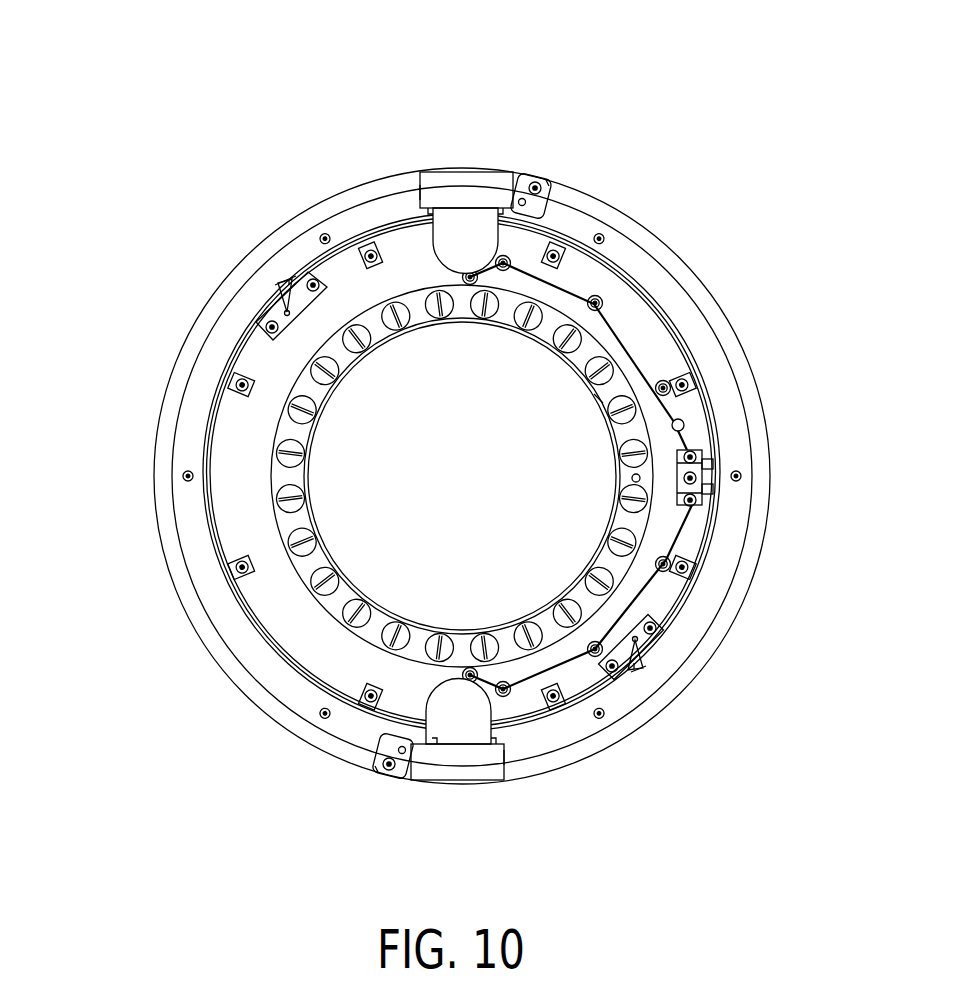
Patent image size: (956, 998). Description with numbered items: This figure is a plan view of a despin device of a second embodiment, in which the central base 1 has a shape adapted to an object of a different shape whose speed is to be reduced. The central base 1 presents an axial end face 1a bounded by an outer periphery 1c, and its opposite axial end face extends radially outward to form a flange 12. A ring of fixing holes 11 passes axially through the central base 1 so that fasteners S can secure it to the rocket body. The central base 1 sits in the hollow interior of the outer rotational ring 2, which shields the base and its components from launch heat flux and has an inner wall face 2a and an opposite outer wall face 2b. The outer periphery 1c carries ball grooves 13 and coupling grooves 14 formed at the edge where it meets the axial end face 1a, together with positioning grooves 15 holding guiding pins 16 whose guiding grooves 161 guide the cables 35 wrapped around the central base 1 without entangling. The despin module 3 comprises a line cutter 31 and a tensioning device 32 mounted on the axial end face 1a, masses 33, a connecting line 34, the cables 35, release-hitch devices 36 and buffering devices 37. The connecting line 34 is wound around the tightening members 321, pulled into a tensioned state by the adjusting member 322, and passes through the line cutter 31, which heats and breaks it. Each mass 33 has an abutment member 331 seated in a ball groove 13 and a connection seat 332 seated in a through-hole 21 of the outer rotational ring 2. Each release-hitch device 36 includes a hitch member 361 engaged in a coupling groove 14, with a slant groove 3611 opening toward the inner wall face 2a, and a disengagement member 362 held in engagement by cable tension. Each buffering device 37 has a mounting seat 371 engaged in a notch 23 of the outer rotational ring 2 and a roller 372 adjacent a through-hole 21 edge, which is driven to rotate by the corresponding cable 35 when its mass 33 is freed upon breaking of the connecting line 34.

The central base 1 is at (212, 410).
The axial end face 1a is at (282, 622).
The outer periphery 1c is at (292, 640).
The outer rotational ring 2 is at (50, 503).
The inner wall face 2a is at (200, 550).
The outer wall face 2b is at (157, 498).
The despin module 3 is at (707, 584).
The fixing holes 11 is at (582, 342).
The flange 12 is at (717, 366).
The ball grooves 13 is at (405, 222).
The coupling grooves 14 is at (266, 322).
The positioning grooves 15 is at (290, 305).
The guiding pins 16 is at (371, 240).
The guiding grooves 161 is at (358, 243).
The through-holes 21 is at (420, 183).
The notches 23 is at (553, 192).
The line cutter 31 is at (684, 424).
The tensioning device 32 is at (848, 478).
The tightening members 321 is at (695, 528).
The adjusting member 322 is at (704, 470).
The masses 33 is at (518, 98).
The abutment member 331 is at (472, 215).
The connection seat 332 is at (434, 185).
The connecting line 34 is at (668, 603).
The cables 35 is at (243, 610).
The release-hitch devices 36 is at (178, 192).
The hitch member 361 is at (449, 472).
The slant groove 3611 is at (281, 303).
The disengagement member 362 is at (280, 292).
The buffering devices 37 is at (622, 72).
The mounting seat 371 is at (541, 190).
The roller 372 is at (524, 200).